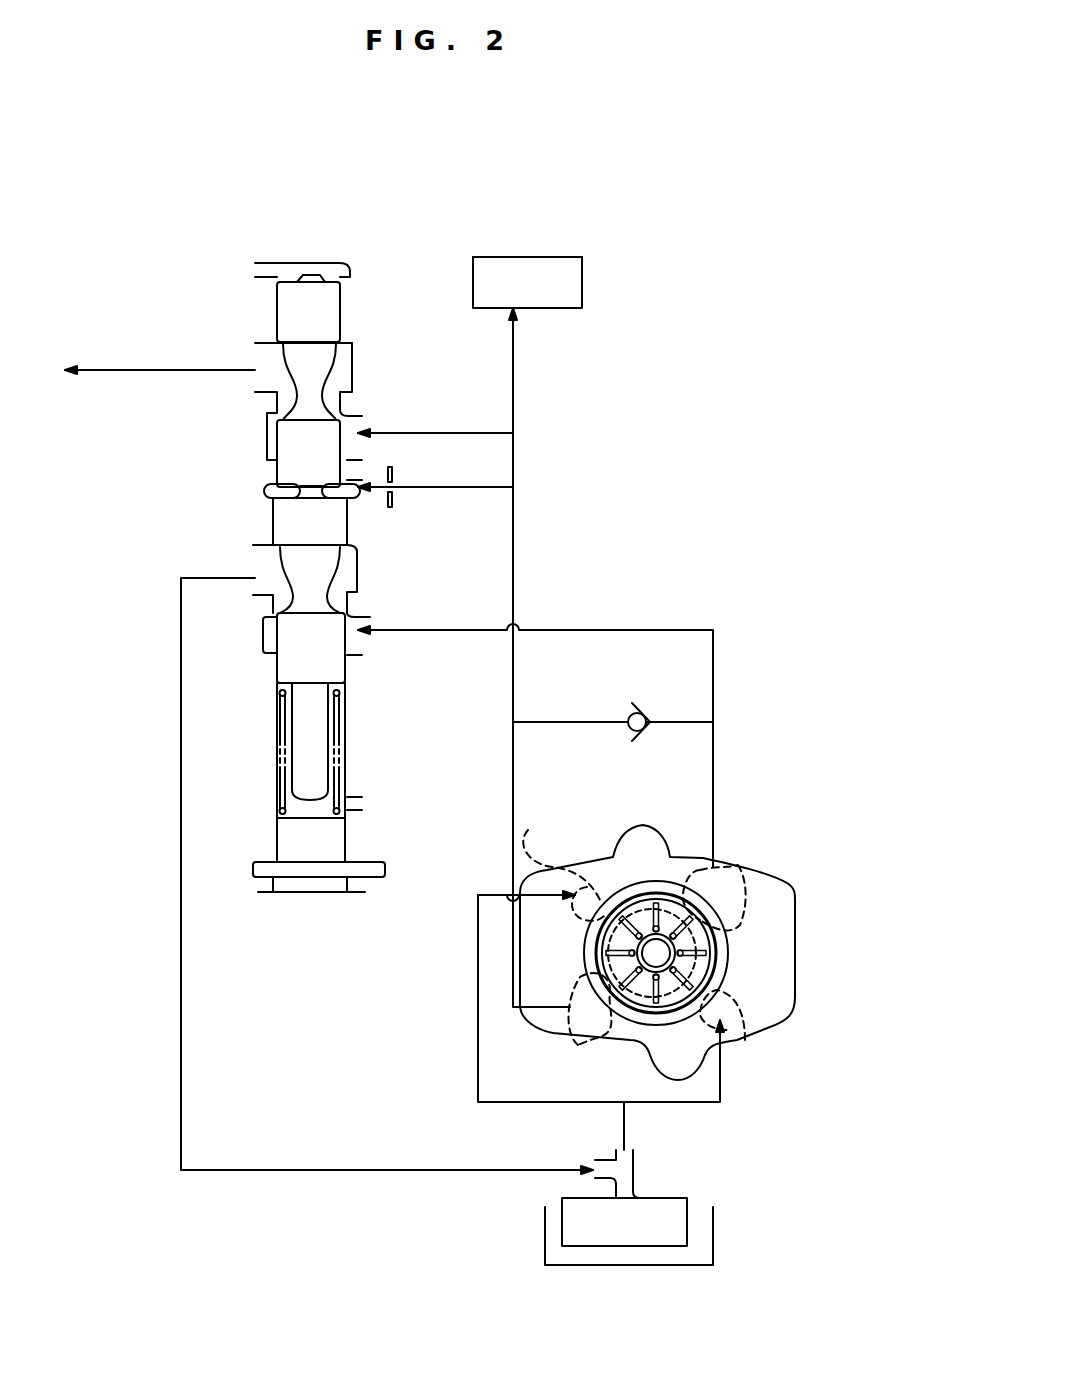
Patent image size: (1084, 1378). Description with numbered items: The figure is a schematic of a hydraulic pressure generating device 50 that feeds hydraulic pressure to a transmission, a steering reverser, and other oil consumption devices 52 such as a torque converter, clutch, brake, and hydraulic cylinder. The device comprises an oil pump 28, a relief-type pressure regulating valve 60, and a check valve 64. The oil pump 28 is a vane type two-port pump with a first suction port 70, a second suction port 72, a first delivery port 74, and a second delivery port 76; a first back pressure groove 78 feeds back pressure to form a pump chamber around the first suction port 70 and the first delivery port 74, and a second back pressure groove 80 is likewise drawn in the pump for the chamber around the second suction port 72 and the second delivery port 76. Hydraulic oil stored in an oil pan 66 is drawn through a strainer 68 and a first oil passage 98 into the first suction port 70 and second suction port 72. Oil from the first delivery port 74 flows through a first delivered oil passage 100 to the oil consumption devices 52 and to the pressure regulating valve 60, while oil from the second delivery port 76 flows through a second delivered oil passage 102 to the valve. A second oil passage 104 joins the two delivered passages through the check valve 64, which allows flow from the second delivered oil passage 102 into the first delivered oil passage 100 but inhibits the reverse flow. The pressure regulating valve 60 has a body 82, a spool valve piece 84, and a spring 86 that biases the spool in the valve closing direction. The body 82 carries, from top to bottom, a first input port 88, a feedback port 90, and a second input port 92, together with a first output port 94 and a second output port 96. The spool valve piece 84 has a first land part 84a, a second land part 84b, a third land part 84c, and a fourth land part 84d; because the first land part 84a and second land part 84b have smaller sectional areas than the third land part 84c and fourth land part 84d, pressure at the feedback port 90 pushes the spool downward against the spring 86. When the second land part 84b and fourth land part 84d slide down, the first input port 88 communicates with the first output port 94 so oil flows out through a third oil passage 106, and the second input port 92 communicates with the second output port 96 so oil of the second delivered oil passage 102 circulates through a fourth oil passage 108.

The oil pump 28 is at (671, 979).
The hydraulic pressure generating device 50 is at (688, 243).
The oil consumption devices 52 is at (497, 257).
The pressure regulating valve 60 is at (170, 240).
The check valve 64 is at (640, 745).
The oil pan 66 is at (690, 1265).
The strainer 68 is at (679, 1198).
The first suction port 70 is at (745, 1040).
The second suction port 72 is at (528, 830).
The first delivery port 74 is at (578, 1045).
The second delivery port 76 is at (738, 865).
The first back pressure groove 78 is at (700, 965).
The cam ring 80 is at (700, 940).
The body 82 is at (277, 838).
The spool valve piece 84 is at (297, 470).
The first land part 84a is at (285, 312).
The second land part 84b is at (285, 478).
The third land part 84c is at (283, 516).
The fourth land part 84d is at (295, 660).
The spring 86 is at (343, 777).
The first input port 88 is at (362, 418).
The feedback port 90 is at (360, 493).
The second input port 92 is at (360, 615).
The first output port 94 is at (260, 343).
The second output port 96 is at (257, 548).
The first oil passage 98 is at (478, 937).
The first delivered oil passage 100 is at (515, 540).
The second delivered oil passage 102 is at (612, 630).
The second oil passage 104 is at (538, 722).
The third oil passage 106 is at (153, 370).
The fourth oil passage 108 is at (181, 765).